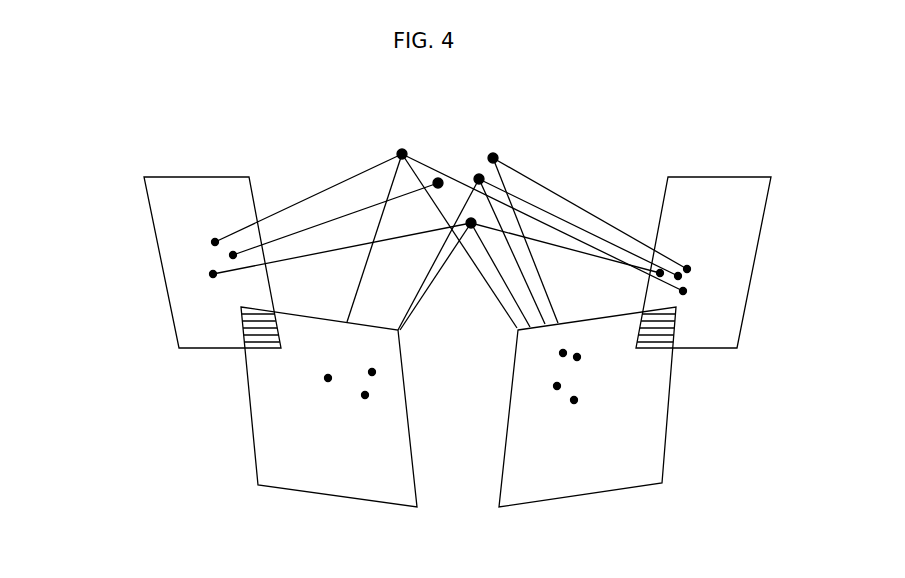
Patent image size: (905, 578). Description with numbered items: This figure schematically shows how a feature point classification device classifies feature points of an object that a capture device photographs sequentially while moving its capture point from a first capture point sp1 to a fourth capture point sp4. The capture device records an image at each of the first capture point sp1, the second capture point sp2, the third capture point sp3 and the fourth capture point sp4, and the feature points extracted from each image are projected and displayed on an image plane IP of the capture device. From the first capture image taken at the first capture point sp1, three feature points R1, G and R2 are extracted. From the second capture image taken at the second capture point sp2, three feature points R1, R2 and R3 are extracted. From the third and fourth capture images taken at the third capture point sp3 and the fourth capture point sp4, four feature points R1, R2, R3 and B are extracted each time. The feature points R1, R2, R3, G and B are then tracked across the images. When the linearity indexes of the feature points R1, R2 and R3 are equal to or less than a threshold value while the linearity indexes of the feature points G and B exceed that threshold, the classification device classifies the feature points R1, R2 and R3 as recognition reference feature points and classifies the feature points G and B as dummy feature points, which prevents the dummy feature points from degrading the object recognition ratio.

The image plane IP is at (191, 188).
The feature point R1 is at (449, 227).
The feature point R2 is at (436, 264).
The feature point R3 is at (538, 242).
The feature point G is at (338, 216).
The feature point B is at (587, 229).
The first capture point sp1 is at (233, 255).
The second capture point sp2 is at (372, 372).
The third capture point sp3 is at (563, 353).
The fourth capture point sp4 is at (660, 273).